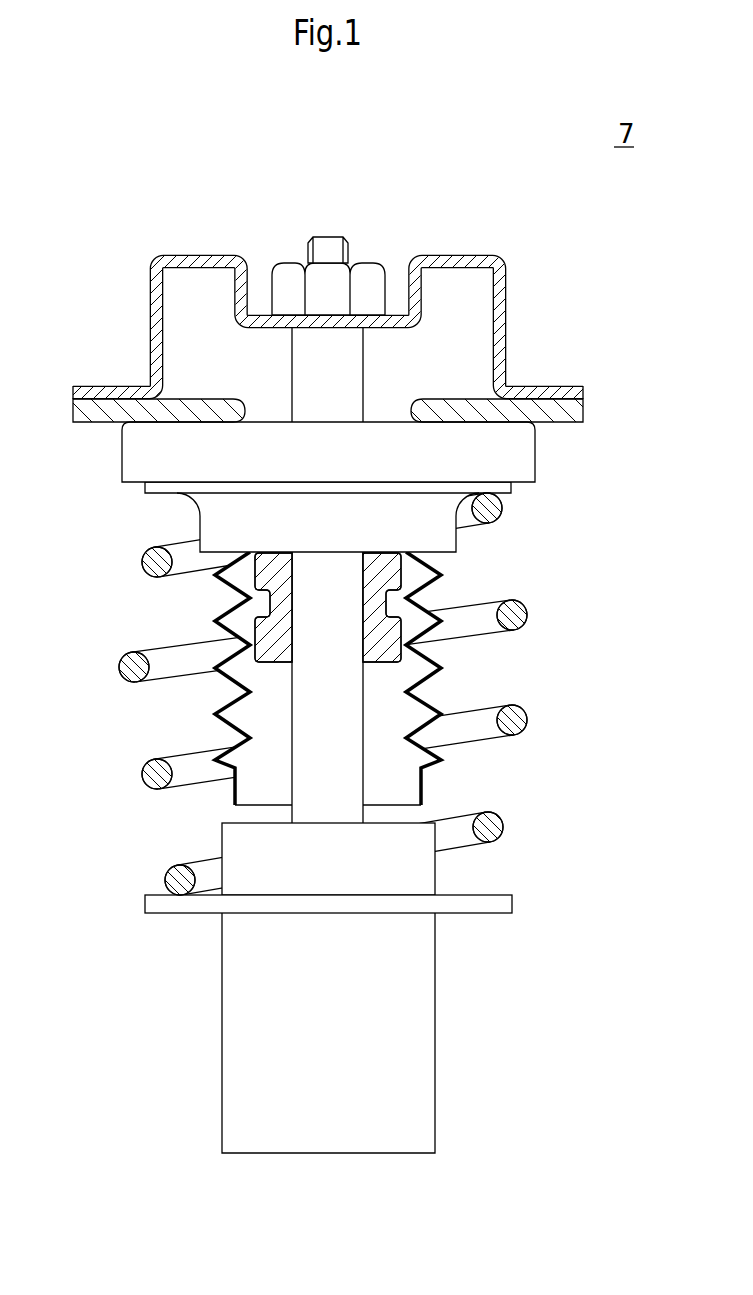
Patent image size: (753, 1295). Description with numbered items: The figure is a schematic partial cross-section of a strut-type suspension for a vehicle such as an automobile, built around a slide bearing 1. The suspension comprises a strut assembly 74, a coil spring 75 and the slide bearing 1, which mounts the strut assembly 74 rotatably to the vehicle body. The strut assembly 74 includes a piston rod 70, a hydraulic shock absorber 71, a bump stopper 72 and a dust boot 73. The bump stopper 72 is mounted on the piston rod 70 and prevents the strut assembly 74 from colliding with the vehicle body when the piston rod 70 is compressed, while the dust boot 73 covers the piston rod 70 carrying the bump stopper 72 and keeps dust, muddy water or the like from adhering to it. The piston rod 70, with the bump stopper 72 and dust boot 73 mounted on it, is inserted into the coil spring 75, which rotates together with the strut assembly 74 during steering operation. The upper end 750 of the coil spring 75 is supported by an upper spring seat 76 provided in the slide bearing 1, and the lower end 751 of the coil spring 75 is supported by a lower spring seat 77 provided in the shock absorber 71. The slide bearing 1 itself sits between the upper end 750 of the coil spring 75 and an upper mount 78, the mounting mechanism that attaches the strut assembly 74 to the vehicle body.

The slide bearing 1 is at (536, 462).
The piston rod 70 is at (292, 707).
The hydraulic shock absorber 71 is at (435, 1048).
The bump stopper 72 is at (441, 575).
The dust boot 73 is at (441, 668).
The strut assembly 74 is at (522, 849).
The coil spring 75 is at (527, 718).
The upper end of the coil spring 750 is at (503, 503).
The lower end of the coil spring 751 is at (168, 868).
The upper spring seat 76 is at (164, 514).
The lower spring seat 77 is at (145, 897).
The upper mount 78 is at (560, 354).